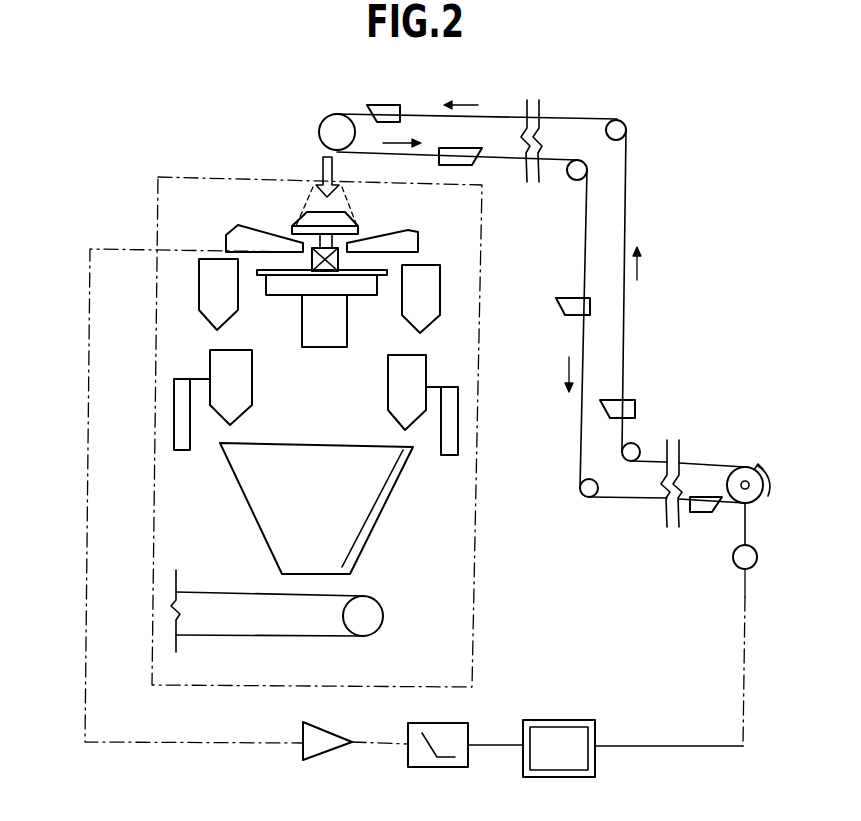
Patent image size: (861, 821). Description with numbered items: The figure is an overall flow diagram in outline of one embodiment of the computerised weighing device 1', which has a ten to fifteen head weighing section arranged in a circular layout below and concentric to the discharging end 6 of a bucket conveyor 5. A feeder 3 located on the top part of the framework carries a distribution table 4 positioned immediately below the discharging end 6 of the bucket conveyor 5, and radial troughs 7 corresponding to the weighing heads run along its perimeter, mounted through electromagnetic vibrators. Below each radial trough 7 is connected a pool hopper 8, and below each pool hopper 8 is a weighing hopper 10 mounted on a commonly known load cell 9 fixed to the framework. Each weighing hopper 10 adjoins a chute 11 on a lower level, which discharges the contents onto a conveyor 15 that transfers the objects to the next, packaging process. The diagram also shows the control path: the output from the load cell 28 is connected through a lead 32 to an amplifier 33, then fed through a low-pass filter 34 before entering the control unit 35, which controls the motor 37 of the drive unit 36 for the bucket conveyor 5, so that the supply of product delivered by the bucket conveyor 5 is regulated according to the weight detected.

The computerised weighing device 1' is at (345, 432).
The feeder 3 is at (280, 217).
The distribution table 4 is at (354, 219).
The bucket conveyor 5 is at (626, 188).
The discharging end 6 is at (335, 113).
The radial trough 7 is at (418, 242).
The pool hopper 8 is at (430, 289).
The load cell 9 is at (448, 433).
The weighing hopper 10 is at (220, 369).
The chute 11 is at (270, 506).
The conveyor 15 is at (270, 635).
The load cell 28 is at (312, 262).
The lead 32 is at (85, 548).
The amplifier 33 is at (330, 752).
The low-pass filter 34 is at (447, 768).
The control unit 35 is at (558, 720).
The drive unit 36 is at (743, 466).
The motor 37 is at (733, 562).